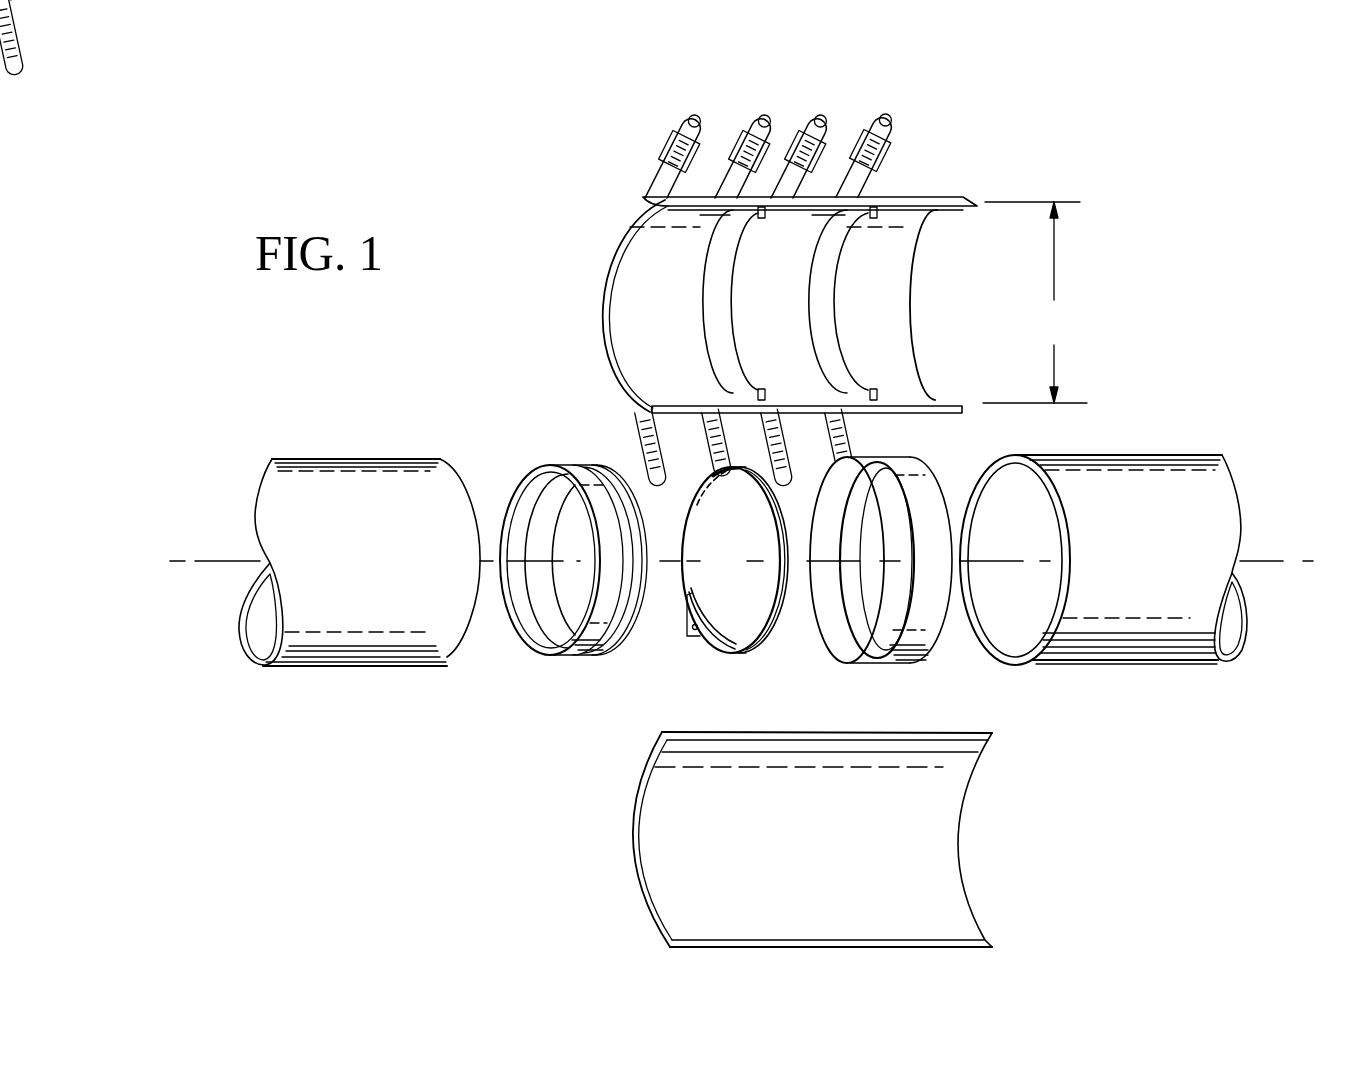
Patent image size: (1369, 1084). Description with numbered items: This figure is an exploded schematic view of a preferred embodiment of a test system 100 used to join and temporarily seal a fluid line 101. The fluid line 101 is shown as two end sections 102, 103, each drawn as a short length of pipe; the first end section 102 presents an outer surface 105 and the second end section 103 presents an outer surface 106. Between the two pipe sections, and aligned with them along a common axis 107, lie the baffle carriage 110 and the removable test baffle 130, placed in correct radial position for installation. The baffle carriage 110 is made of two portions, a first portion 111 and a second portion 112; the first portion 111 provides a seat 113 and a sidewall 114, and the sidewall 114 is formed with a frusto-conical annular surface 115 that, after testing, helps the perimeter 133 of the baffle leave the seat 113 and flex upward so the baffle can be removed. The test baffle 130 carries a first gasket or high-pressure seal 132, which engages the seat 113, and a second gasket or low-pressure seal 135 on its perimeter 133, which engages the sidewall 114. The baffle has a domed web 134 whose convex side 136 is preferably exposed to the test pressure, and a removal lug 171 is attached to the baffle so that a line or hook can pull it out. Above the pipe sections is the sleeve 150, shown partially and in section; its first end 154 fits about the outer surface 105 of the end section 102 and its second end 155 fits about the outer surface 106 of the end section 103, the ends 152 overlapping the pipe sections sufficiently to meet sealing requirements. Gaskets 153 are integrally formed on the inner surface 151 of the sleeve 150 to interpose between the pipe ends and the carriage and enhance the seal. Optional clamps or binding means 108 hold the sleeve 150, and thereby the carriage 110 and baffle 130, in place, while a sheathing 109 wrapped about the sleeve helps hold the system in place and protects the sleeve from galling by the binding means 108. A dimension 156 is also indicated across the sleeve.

The test system 100 is at (609, 243).
The fluid line 101 is at (340, 459).
The end section 102 is at (422, 668).
The end section 103 is at (1130, 663).
The outer surface 105 is at (736, 570).
The outer surface 106 is at (1103, 585).
The axis 107 is at (195, 565).
The clamps or binding means 108 is at (892, 137).
The sheathing 109 is at (958, 850).
The baffle carriage 110 is at (567, 595).
The first portion 111 is at (908, 664).
The second portion 112 is at (570, 653).
The seat 113 is at (862, 652).
The sidewall 114 is at (876, 584).
The frusto-conical annular surface 115 is at (543, 613).
The test baffle 130 is at (677, 569).
The first gasket or high-pressure seal 132 is at (773, 640).
The perimeter 133 is at (783, 603).
The web 134 is at (690, 527).
The second gasket or low pressure seal 135 is at (785, 553).
The convex side 136 is at (757, 521).
The sleeve 150 is at (498, 243).
The inner surface 151 is at (670, 316).
The ends 152 is at (919, 288).
The gaskets 153 is at (742, 377).
The first end 154 is at (687, 376).
The second end 155 is at (888, 277).
The clamp width 156 is at (1035, 302).
The lug 171 is at (710, 638).